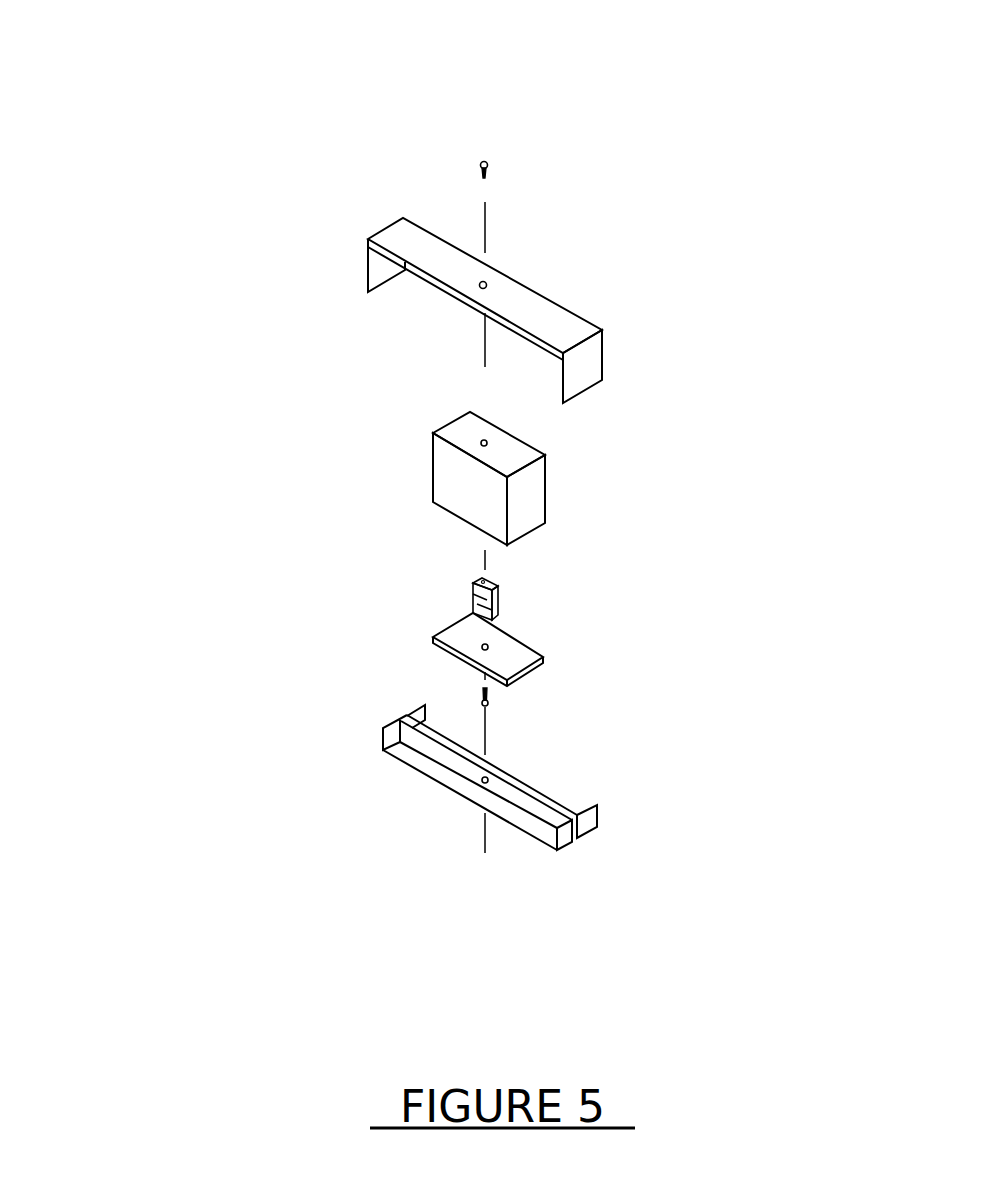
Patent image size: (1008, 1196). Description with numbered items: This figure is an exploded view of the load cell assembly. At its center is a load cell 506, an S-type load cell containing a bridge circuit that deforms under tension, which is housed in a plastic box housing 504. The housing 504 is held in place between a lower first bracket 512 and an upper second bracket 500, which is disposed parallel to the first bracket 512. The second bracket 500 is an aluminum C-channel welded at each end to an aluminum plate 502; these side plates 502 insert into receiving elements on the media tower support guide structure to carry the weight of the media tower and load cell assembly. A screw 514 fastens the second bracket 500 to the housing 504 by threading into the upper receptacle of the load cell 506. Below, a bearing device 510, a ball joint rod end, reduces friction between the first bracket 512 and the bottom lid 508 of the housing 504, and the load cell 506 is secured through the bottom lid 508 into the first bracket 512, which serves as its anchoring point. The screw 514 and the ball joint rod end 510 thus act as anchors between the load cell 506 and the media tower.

The second bracket 500 is at (260, 443).
The aluminum plate 502 is at (608, 310).
The housing 504 is at (611, 469).
The load cell 506 is at (616, 555).
The bottom lid 508 is at (618, 619).
The bearing device 510 is at (614, 672).
The first bracket 512 is at (620, 777).
The screw 514 is at (613, 123).